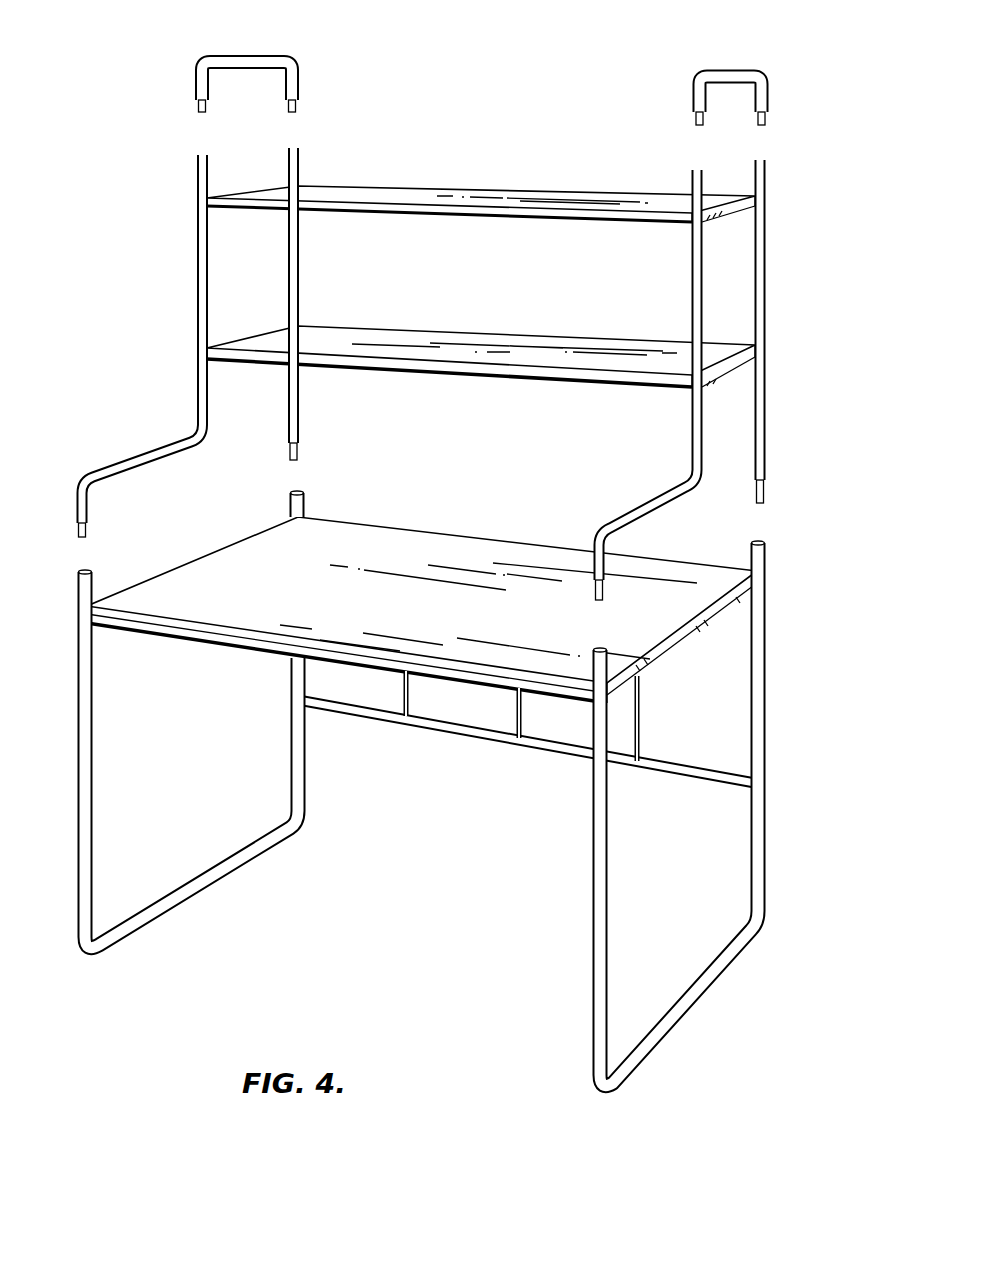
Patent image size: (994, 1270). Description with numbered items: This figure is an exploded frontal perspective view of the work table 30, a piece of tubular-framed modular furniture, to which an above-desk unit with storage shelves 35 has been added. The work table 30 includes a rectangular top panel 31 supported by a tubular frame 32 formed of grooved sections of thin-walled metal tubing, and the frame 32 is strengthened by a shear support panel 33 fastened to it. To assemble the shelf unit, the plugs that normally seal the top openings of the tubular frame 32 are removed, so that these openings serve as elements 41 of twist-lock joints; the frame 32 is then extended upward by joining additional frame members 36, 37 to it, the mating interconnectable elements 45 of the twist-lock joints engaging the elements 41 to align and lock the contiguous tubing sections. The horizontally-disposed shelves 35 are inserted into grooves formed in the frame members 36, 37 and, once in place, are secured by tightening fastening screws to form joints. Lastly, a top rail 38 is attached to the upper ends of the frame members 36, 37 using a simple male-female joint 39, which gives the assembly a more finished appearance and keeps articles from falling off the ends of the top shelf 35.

The work table 30 is at (790, 701).
The top panel 31 is at (300, 598).
The tubular frame 32 is at (78, 745).
The shear support panel 33 is at (481, 745).
The storage shelves 35 is at (412, 192).
The frame member 36 is at (300, 258).
The frame member 37 is at (196, 295).
The top rail 38 is at (245, 56).
The male-female joint 39 is at (198, 108).
The twist-lock joint element 41 is at (293, 490).
The twist-lock joint element 45 is at (300, 450).